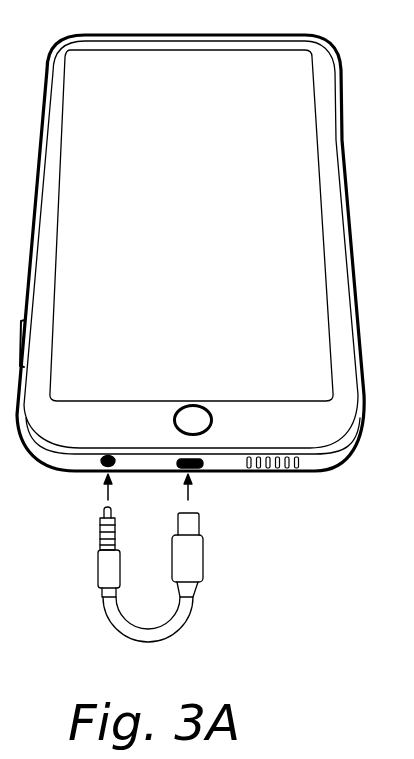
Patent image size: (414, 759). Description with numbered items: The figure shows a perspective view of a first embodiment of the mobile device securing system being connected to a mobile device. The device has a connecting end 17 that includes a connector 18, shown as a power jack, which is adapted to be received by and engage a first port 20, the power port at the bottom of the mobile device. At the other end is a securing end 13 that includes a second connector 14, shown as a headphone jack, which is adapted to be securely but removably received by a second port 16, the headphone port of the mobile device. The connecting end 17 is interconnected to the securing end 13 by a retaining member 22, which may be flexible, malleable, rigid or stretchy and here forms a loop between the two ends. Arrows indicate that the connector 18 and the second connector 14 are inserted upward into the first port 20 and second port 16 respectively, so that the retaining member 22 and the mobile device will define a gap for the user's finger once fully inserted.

The securing end 13 is at (105, 575).
The second connector 14 is at (98, 537).
The second port 16 is at (100, 471).
The connecting end 17 is at (202, 570).
The connector 18 is at (200, 520).
The first port 20 is at (200, 470).
The retaining member 22 is at (162, 628).